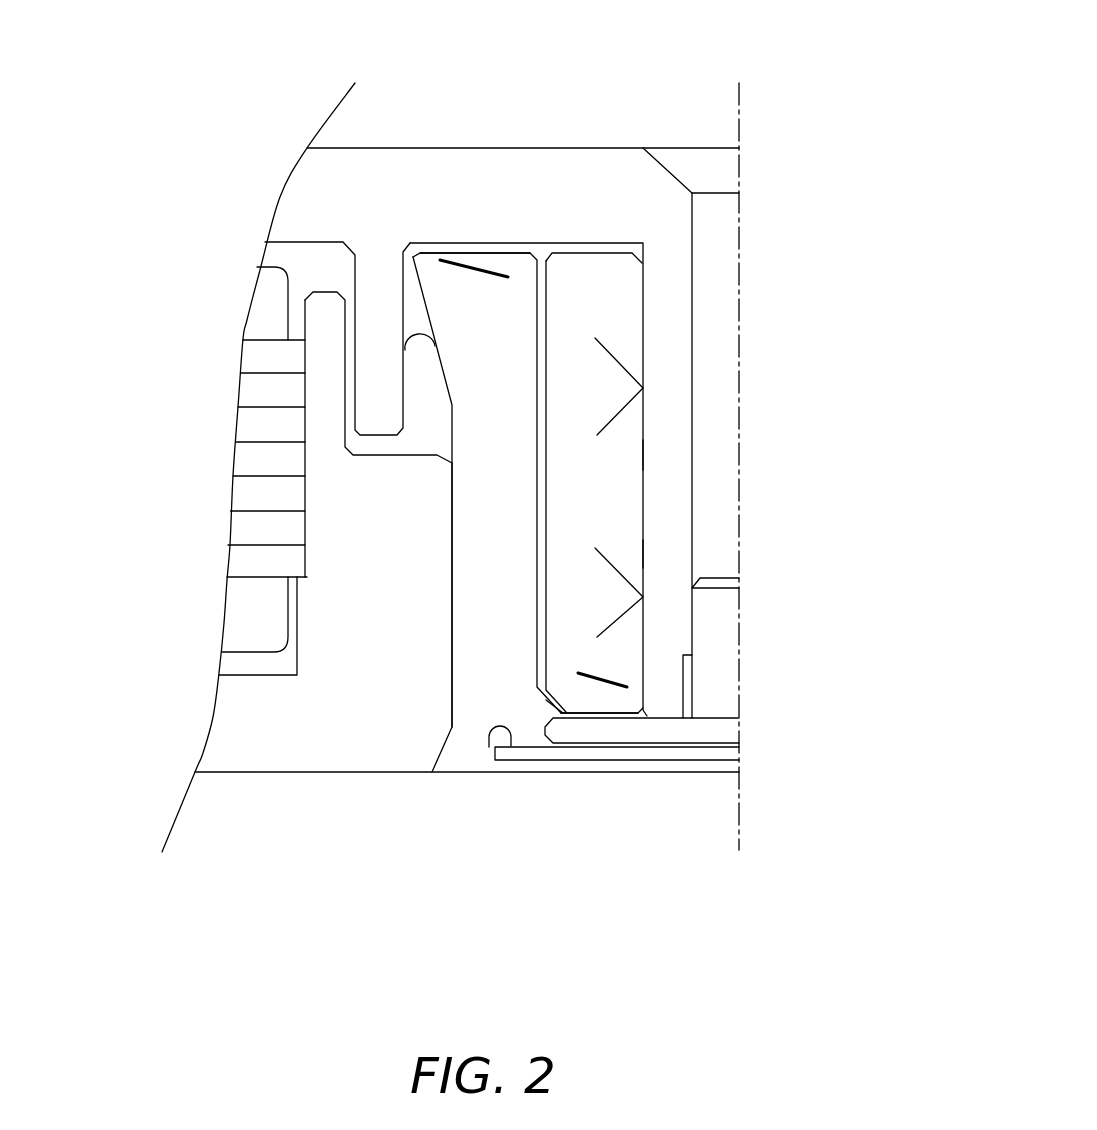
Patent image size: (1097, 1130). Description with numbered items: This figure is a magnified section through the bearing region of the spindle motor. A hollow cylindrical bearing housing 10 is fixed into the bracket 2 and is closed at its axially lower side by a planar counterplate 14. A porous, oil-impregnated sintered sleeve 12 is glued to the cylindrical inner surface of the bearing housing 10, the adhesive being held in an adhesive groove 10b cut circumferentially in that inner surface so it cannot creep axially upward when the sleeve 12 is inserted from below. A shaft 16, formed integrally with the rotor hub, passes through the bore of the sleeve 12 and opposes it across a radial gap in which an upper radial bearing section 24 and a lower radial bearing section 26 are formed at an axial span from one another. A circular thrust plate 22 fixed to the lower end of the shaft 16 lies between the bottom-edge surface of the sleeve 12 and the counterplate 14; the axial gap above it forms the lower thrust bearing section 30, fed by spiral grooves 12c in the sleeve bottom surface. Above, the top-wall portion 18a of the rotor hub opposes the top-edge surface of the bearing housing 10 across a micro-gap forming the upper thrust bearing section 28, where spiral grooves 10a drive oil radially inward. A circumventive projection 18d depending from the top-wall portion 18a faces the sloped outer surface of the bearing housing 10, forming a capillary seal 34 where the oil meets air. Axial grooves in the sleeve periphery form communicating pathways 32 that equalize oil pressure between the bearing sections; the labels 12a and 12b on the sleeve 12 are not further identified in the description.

The bracket 2 is at (290, 723).
The bearing housing 10 is at (497, 563).
The spiral grooves 10a is at (482, 272).
The adhesive groove 10b is at (470, 470).
The sleeve 12 is at (578, 628).
The first seal lip 12a is at (619, 407).
The second seal lip 12b is at (619, 625).
The spiral grooves 12c is at (612, 716).
The counterplate 14 is at (675, 757).
The shaft 16 is at (675, 307).
The top-wall portion 18a is at (483, 210).
The circumventive projection 18d is at (387, 403).
The thrust plate 22 is at (643, 740).
The upper radial bearing section 24 is at (643, 467).
The lower radial bearing section 26 is at (643, 565).
The upper thrust bearing section 28 is at (460, 250).
The lower thrust bearing section 30 is at (593, 673).
The communicating pathways 32 is at (543, 403).
The capillary seal 34 is at (420, 338).